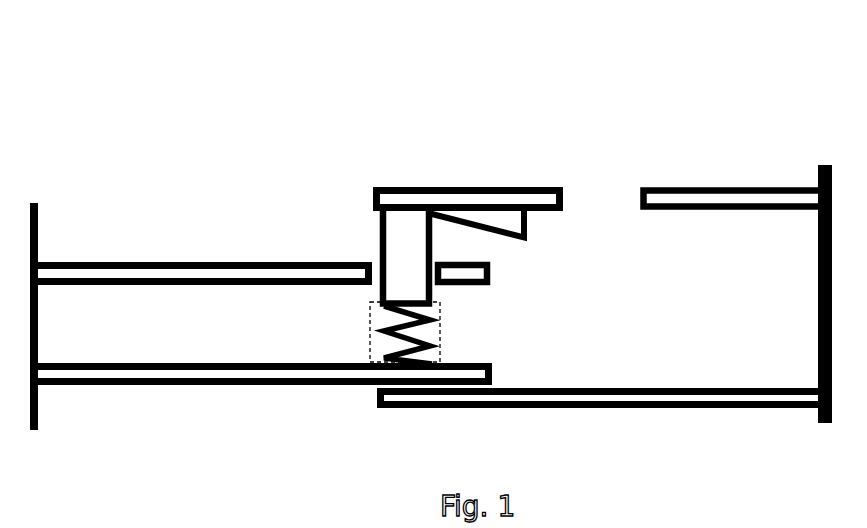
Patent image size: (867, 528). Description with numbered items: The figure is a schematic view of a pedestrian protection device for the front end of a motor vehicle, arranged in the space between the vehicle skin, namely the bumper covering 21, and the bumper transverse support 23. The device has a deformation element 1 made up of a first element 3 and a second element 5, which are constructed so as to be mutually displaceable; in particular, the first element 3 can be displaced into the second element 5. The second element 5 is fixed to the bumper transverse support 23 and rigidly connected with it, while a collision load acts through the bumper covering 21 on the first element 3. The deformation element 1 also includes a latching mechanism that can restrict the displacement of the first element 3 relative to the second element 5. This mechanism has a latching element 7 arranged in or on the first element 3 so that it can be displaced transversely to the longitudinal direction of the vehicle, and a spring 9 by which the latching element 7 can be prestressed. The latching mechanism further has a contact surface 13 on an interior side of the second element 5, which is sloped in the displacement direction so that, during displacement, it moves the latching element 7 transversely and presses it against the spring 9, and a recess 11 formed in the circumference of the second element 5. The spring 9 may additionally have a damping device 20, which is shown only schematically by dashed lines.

The deformation element 1 is at (314, 95).
The first element 3 is at (238, 268).
The second element 5 is at (450, 198).
The latching element 7 is at (403, 232).
The spring 9 is at (440, 335).
The recess 11 is at (598, 197).
The contact surface 13 is at (488, 230).
The damping device 20 is at (372, 322).
The bumper covering 21 is at (38, 222).
The bumper transverse support 23 is at (818, 167).